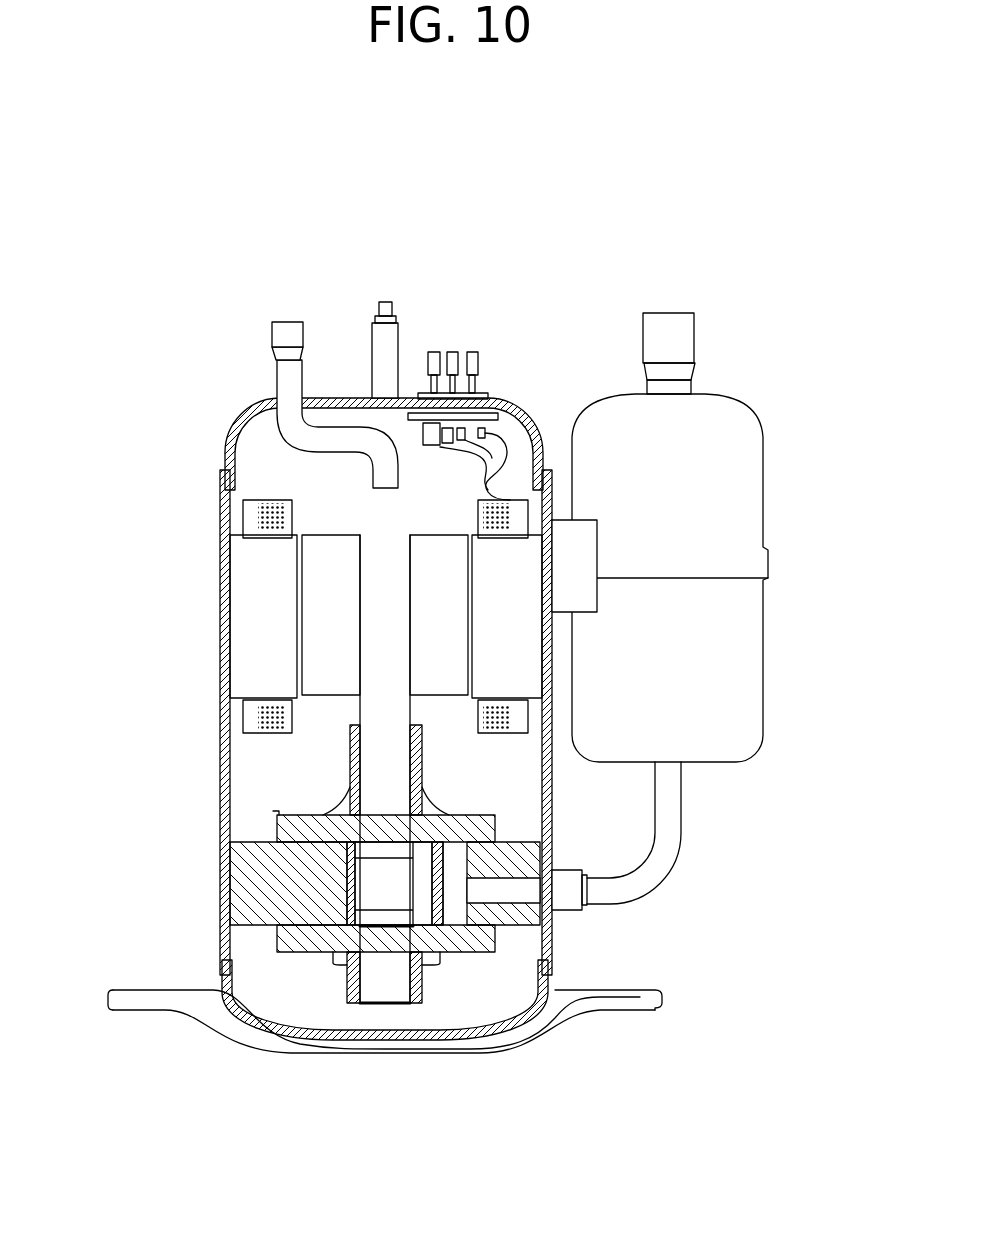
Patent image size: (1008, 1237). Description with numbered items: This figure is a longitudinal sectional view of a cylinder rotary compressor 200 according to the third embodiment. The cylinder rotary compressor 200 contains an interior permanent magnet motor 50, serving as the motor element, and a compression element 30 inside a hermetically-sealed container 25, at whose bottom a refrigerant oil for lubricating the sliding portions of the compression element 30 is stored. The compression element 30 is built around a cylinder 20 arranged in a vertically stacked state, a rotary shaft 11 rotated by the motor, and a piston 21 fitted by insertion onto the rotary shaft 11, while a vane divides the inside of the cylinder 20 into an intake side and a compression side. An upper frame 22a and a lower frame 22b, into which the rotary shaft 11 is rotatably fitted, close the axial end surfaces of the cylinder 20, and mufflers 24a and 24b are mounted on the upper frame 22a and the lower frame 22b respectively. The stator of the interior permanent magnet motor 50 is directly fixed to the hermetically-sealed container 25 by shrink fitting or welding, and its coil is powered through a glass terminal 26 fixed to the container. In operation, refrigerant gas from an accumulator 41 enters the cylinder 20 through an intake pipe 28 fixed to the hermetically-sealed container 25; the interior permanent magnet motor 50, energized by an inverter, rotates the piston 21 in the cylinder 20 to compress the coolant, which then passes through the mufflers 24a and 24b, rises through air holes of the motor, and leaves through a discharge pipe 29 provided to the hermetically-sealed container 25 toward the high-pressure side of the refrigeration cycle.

The cylinder rotary compressor 200 is at (114, 168).
The rotary shaft 11 is at (372, 688).
The cylinder 20 is at (277, 860).
The piston 21 is at (348, 904).
The upper frame 22a is at (545, 833).
The lower frame 22b is at (468, 933).
The muffler 24a is at (333, 800).
The muffler 24b is at (437, 955).
The hermetically-sealed container 25 is at (256, 406).
The glass terminal 26 is at (459, 357).
The intake pipe 28 is at (665, 821).
The discharge pipe 29 is at (315, 443).
The compression element 30 is at (290, 1005).
The accumulator 41 is at (728, 468).
The interior permanent magnet motor 50 is at (265, 487).